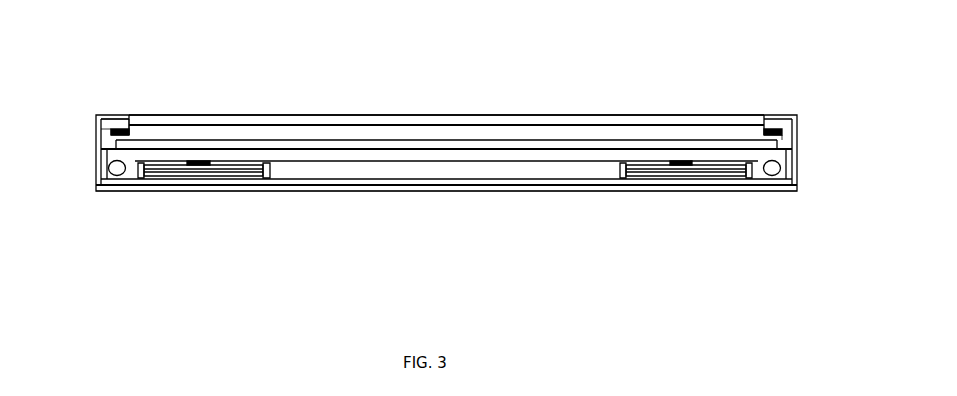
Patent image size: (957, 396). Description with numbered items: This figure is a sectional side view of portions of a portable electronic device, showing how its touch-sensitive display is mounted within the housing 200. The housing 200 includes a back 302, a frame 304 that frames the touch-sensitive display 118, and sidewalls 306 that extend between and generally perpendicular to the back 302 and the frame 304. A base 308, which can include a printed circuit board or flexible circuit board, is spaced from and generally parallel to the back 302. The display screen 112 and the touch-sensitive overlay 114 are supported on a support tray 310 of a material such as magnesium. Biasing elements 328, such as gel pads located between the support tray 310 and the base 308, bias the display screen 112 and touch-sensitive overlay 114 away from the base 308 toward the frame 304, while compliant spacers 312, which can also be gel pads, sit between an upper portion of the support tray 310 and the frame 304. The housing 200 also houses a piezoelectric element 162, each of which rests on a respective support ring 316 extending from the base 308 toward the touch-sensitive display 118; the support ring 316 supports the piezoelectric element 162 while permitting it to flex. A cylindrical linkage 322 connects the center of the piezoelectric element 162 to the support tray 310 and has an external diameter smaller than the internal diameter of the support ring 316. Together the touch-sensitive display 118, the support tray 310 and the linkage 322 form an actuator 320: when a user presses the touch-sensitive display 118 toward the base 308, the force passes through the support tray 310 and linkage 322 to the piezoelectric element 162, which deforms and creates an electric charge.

The housing 200 is at (300, 216).
The display screen 112 is at (592, 133).
The touch-sensitive overlay 114 is at (655, 123).
The touch-sensitive display 118 is at (288, 110).
The piezoelectric element 162 is at (218, 177).
The back 302 is at (655, 190).
The frame 304 is at (120, 121).
The sidewalls 306 is at (117, 143).
The base 308 is at (510, 182).
The support tray 310 is at (777, 141).
The compliant spacers 312 is at (113, 131).
The support ring 316 is at (143, 176).
The actuator 320 is at (460, 108).
The linkage 322 is at (199, 161).
The biasing elements 328 is at (117, 168).